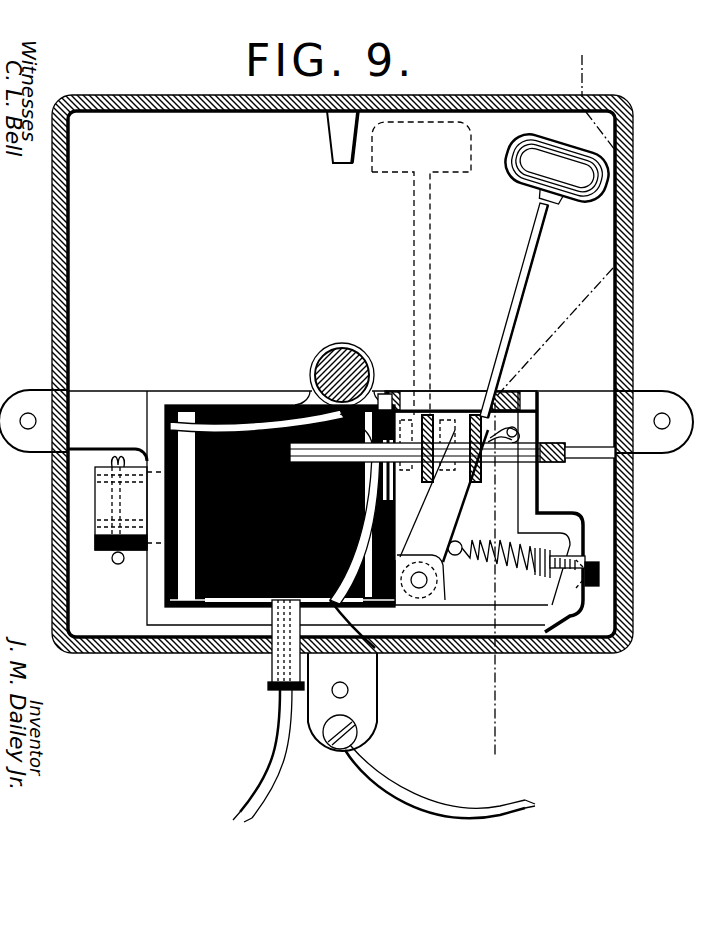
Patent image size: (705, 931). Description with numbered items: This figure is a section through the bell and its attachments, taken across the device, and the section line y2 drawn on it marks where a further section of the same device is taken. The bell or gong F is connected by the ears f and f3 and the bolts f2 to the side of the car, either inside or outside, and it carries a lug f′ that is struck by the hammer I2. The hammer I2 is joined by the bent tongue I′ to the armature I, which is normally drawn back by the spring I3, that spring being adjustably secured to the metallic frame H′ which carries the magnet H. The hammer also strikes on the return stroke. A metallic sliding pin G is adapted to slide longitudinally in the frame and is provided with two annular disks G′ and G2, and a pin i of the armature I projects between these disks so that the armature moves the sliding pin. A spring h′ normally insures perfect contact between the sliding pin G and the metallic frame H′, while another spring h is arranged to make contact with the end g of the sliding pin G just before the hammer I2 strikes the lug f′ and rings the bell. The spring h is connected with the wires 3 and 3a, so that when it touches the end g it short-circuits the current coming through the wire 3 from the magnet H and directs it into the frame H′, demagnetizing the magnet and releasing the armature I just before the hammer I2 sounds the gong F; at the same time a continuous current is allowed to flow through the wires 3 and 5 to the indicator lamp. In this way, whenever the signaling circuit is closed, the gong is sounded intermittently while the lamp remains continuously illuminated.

The bell F is at (618, 228).
The ear f is at (26, 453).
The lug f′ is at (330, 131).
The bolt f2 is at (354, 362).
The ear f3 is at (362, 698).
The sliding pin G is at (550, 446).
The annular disk G′ is at (482, 440).
The annular disk G2 is at (433, 425).
The end of sliding pin g is at (303, 424).
The magnet H is at (216, 430).
The metallic frame H′ is at (555, 601).
The armature I is at (447, 535).
The bent tongue I′ is at (543, 280).
The hammer I2 is at (596, 178).
The spring I3 is at (500, 562).
The pin of armature i is at (470, 495).
The spring h is at (386, 393).
The spring h′ is at (505, 432).
The wire 3 is at (378, 650).
The wire 3a is at (240, 425).
The wire 5 is at (440, 812).
The section line y2 is at (550, 408).